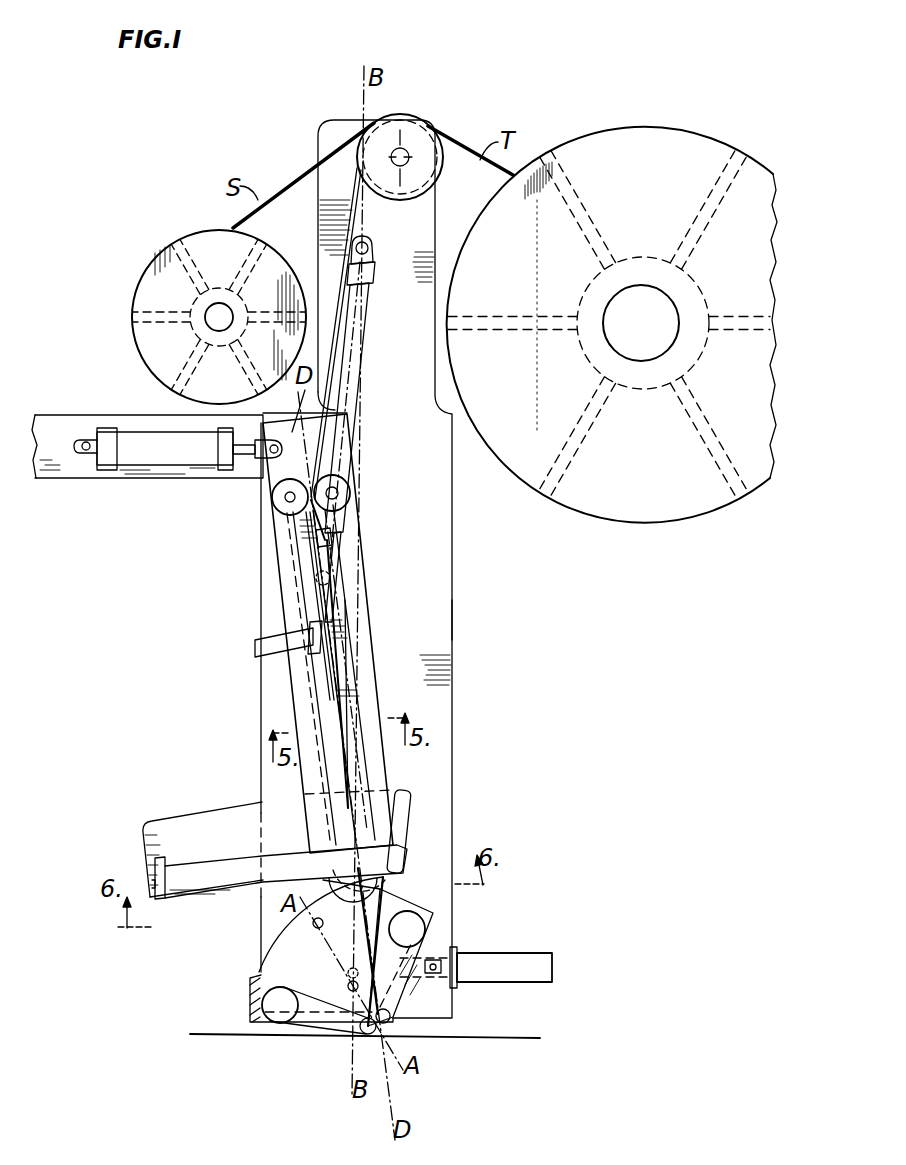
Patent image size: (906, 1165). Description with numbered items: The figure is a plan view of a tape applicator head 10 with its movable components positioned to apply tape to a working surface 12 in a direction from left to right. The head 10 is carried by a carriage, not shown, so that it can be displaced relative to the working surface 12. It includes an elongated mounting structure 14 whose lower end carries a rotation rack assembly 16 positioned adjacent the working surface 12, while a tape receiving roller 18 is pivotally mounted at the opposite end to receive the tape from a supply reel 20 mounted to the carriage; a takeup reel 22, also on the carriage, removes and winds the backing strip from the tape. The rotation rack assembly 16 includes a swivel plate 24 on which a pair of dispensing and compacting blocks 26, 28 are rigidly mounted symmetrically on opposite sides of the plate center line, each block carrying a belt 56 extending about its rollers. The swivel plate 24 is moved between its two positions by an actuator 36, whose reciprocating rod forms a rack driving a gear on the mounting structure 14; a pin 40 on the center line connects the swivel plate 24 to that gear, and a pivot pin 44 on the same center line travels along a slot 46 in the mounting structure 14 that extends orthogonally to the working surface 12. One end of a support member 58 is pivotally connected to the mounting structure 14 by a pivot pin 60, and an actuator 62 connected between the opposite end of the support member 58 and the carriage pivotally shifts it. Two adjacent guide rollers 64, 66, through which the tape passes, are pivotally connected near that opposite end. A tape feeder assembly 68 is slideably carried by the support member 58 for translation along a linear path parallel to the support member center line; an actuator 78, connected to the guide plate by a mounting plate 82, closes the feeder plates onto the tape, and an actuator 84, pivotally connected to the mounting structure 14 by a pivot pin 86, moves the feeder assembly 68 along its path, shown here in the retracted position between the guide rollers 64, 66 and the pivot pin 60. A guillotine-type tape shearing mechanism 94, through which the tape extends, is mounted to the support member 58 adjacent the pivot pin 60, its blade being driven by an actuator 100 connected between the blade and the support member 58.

The tape applicator head 10 is at (467, 598).
The working surface 12 is at (492, 1040).
The elongated mounting structure 14 is at (455, 633).
The rotation rack assembly 16 is at (266, 946).
The tape receiving roller 18 is at (420, 128).
The supply reel 20 is at (634, 128).
The takeup reel 22 is at (165, 244).
The swivel plate 24 is at (256, 978).
The dispensing and compacting block 26 is at (275, 1006).
The dispensing and compacting block 28 is at (415, 934).
The actuator 36 is at (535, 966).
The pin 40 is at (311, 922).
The pivot pin 44 is at (347, 986).
The slot 46 is at (327, 961).
The belt 56 is at (410, 992).
The support member 58 is at (205, 826).
The pivot pin 60 is at (382, 886).
The actuator 62 is at (125, 425).
The guide roller 64 is at (280, 505).
The guide roller 66 is at (342, 480).
The tape feeder assembly 68 is at (345, 638).
The actuator 78 is at (268, 650).
The mounting plate 82 is at (306, 630).
The actuator 84 is at (355, 316).
The pivot pin 86 is at (372, 248).
The guillotine-type tape shearing mechanism 94 is at (403, 842).
The actuator 100 is at (200, 878).